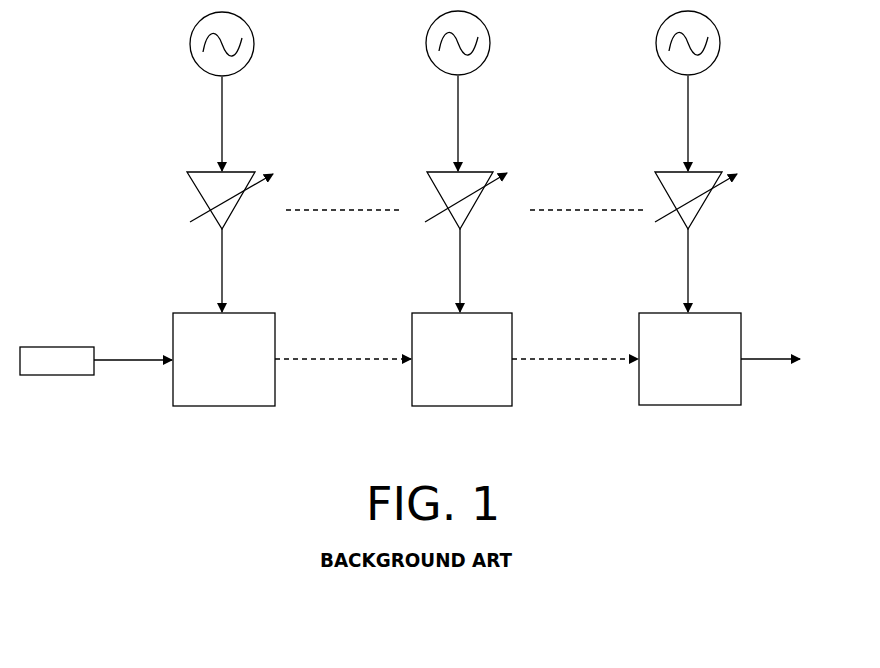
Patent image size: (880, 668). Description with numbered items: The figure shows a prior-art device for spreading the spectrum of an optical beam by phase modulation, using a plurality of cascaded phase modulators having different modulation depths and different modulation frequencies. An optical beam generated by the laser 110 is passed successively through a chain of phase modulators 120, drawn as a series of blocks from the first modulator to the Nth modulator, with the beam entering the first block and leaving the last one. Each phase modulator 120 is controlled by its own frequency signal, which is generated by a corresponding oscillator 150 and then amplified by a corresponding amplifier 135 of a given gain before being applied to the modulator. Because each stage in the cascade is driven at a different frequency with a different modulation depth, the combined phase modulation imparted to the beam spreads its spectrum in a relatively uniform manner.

The laser 110 is at (57, 347).
The phase modulator 120 is at (457, 359).
The amplifier 135 is at (656, 176).
The oscillator 150 is at (656, 45).